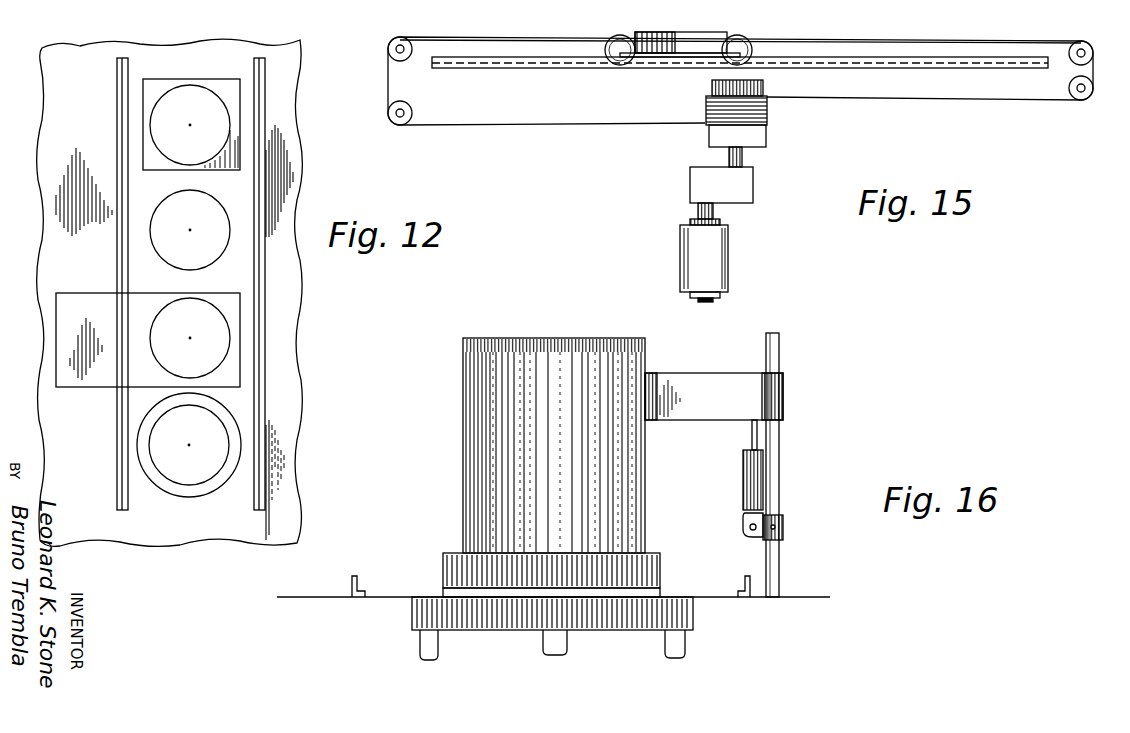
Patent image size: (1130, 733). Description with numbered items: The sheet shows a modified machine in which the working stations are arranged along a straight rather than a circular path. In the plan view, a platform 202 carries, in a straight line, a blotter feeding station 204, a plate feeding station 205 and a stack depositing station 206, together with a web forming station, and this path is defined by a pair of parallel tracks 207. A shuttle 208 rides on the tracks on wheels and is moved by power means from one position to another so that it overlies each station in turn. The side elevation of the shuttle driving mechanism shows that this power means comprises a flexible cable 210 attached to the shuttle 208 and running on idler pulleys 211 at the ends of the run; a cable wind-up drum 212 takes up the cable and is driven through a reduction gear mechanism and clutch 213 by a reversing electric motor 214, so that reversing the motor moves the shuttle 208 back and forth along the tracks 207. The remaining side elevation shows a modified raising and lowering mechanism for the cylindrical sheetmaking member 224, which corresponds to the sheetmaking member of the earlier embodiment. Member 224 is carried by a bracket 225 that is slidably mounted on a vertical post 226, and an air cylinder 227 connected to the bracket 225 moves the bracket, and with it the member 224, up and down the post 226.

In FIG. 12, the platform 202 is at (288, 58).
In FIG. 12, the blotter feeding station 204 is at (72, 298).
In FIG. 12, the plate feeding station 205 is at (162, 235).
In FIG. 12, the stack depositing station 206 is at (152, 91).
In FIG. 12, the parallel tracks 207 is at (260, 63).
In FIG. 15, the parallel tracks 207 is at (557, 68).
In FIG. 16, the parallel tracks 207 is at (358, 592).
In FIG. 15, the shuttle 208 is at (647, 40).
In FIG. 15, the flexible cable 210 is at (533, 38).
In FIG. 15, the idler pulleys 211 is at (404, 58).
In FIG. 15, the cable wind-up drum 212 is at (710, 88).
In FIG. 15, the reduction gear mechanism and clutch 213 is at (690, 182).
In FIG. 15, the reversing electric motor 214 is at (697, 250).
In FIG. 16, the cylindrical sheetmaking member 224 is at (485, 367).
In FIG. 16, the bracket 225 is at (675, 382).
In FIG. 16, the vertical post 226 is at (777, 446).
In FIG. 16, the air cylinder 227 is at (762, 486).